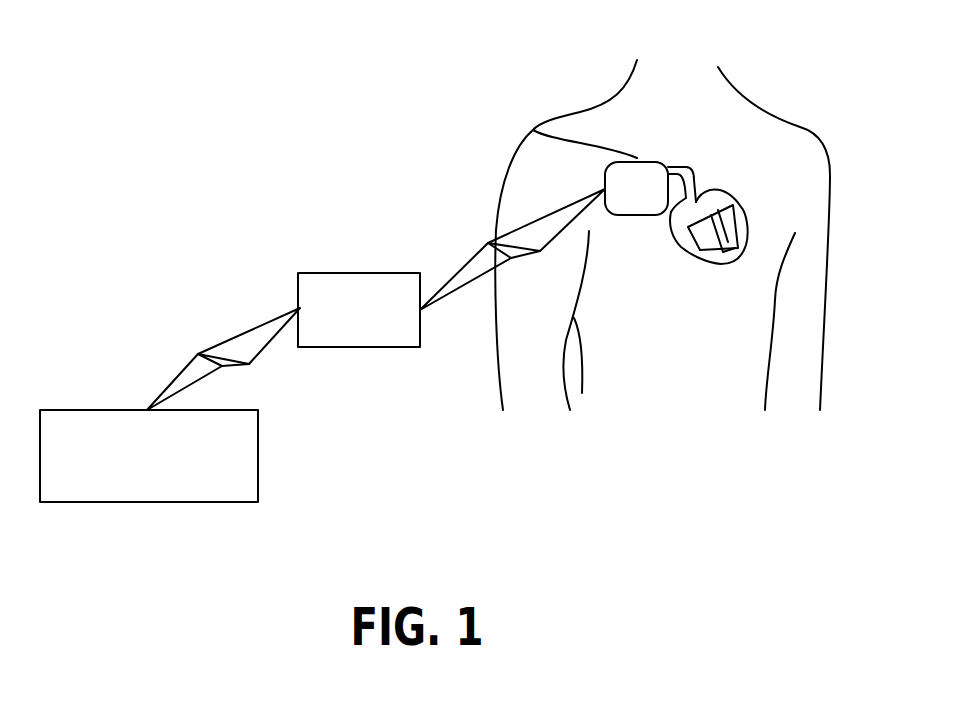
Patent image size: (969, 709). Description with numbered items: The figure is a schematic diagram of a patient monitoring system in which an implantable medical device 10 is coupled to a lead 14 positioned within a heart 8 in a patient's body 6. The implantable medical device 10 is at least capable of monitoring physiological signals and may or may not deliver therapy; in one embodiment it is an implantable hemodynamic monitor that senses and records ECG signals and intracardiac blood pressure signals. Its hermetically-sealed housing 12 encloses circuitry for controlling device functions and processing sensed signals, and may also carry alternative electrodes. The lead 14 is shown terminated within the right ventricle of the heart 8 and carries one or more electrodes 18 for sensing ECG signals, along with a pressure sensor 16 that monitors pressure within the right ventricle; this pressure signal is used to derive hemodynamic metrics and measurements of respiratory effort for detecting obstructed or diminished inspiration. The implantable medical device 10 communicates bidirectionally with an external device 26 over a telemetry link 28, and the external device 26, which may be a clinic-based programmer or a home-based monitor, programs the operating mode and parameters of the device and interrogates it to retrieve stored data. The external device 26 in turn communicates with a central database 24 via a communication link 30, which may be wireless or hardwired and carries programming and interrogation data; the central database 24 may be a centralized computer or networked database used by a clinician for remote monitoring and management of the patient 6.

The patient's body 6 is at (800, 127).
The heart 8 is at (733, 193).
The implantable medical device 10 is at (533, 130).
The hermetically-sealed housing 12 is at (643, 213).
The lead 14 is at (683, 172).
The pressure sensor 16 is at (696, 259).
The electrode 18 is at (736, 262).
The central database 24 is at (110, 410).
The external device 26 is at (355, 272).
The telemetry link 28 is at (477, 278).
The communication link 30 is at (277, 317).